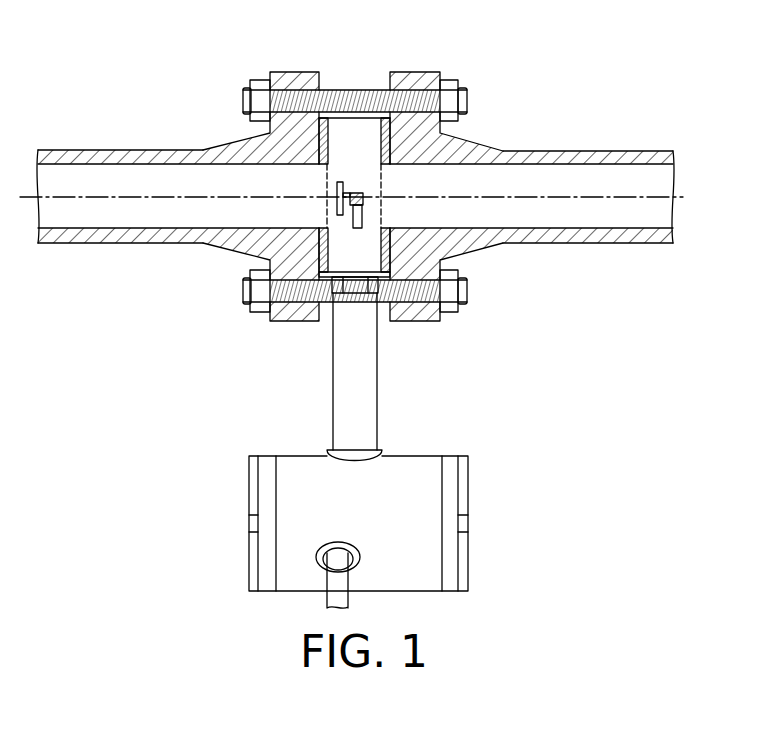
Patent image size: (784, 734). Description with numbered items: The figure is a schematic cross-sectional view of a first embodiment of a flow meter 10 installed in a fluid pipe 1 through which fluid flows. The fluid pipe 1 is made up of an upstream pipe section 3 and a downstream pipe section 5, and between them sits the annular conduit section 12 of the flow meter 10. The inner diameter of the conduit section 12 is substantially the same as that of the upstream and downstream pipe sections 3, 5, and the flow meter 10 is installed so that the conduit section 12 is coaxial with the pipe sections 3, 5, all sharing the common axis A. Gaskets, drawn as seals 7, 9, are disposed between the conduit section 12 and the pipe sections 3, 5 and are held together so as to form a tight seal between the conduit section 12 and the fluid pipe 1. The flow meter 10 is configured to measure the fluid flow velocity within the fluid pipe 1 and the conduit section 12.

The fluid pipe 1 is at (363, 324).
The upstream pipe section 3 is at (137, 244).
The downstream pipe section 5 is at (581, 151).
The seal 7 is at (316, 147).
The seal 9 is at (392, 142).
The flow meter 10 is at (400, 391).
The annular conduit section 12 is at (356, 128).
The pipe axis A is at (363, 196).